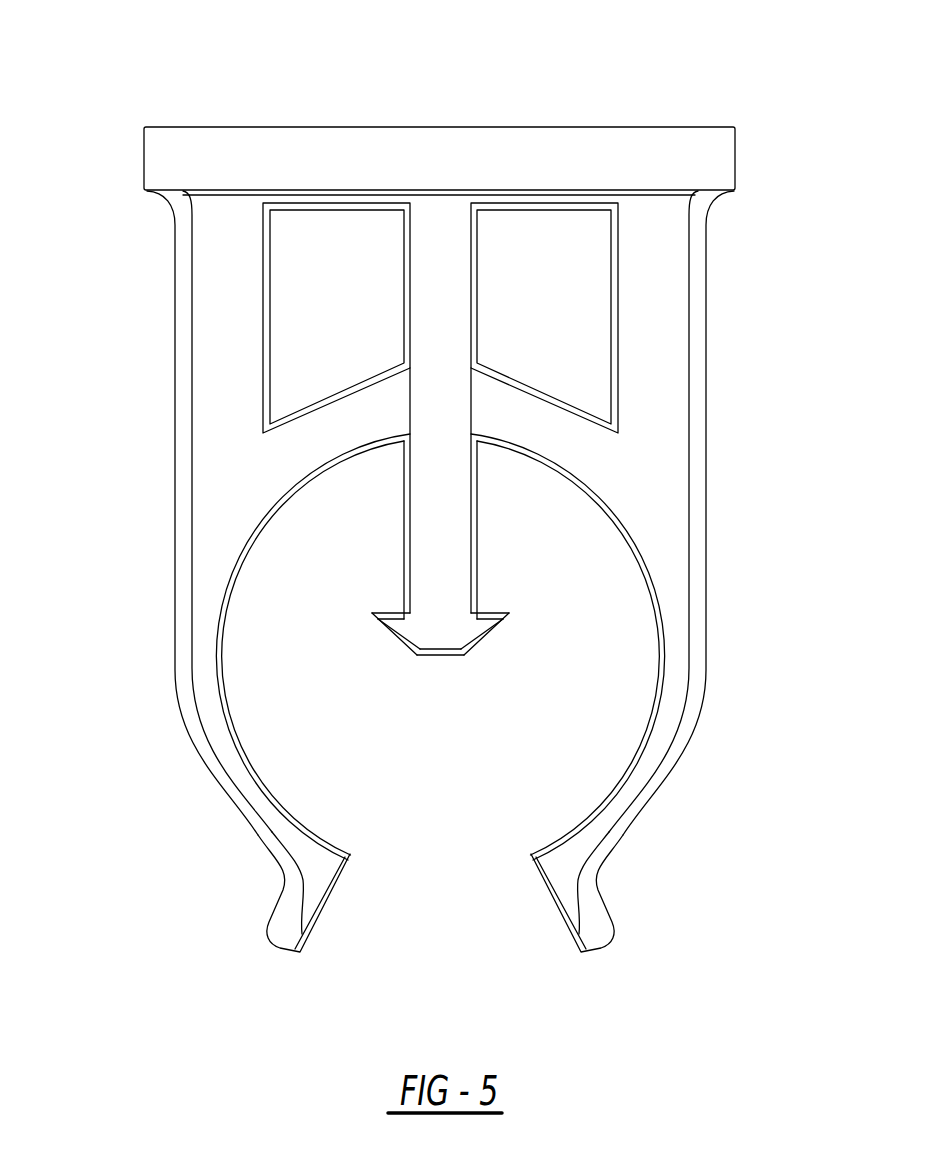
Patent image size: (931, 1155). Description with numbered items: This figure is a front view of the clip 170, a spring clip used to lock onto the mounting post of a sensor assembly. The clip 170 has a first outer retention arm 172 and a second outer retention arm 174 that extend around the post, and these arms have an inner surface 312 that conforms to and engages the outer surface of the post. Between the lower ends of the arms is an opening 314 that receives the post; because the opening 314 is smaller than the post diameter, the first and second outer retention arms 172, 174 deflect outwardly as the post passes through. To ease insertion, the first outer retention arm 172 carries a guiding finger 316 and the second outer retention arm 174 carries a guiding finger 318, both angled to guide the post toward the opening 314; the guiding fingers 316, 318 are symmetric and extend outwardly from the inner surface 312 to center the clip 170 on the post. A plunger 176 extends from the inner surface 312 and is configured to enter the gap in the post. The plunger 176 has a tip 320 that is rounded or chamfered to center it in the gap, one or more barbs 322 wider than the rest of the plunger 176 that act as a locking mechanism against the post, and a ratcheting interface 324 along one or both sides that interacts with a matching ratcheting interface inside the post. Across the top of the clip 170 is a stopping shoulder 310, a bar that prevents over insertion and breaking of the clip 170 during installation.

The clip 170 is at (406, 149).
The stopping shoulder 310 is at (700, 157).
The inner surface 312 is at (645, 737).
The opening 314 is at (437, 855).
The guiding finger 316 is at (586, 922).
The guiding finger 318 is at (293, 935).
The tip 320 is at (442, 623).
The barbs 322 is at (400, 630).
The ratcheting interface 324 is at (400, 509).
The first outer retention arm 172 is at (648, 781).
The second outer retention arm 174 is at (217, 733).
The plunger 176 is at (434, 588).